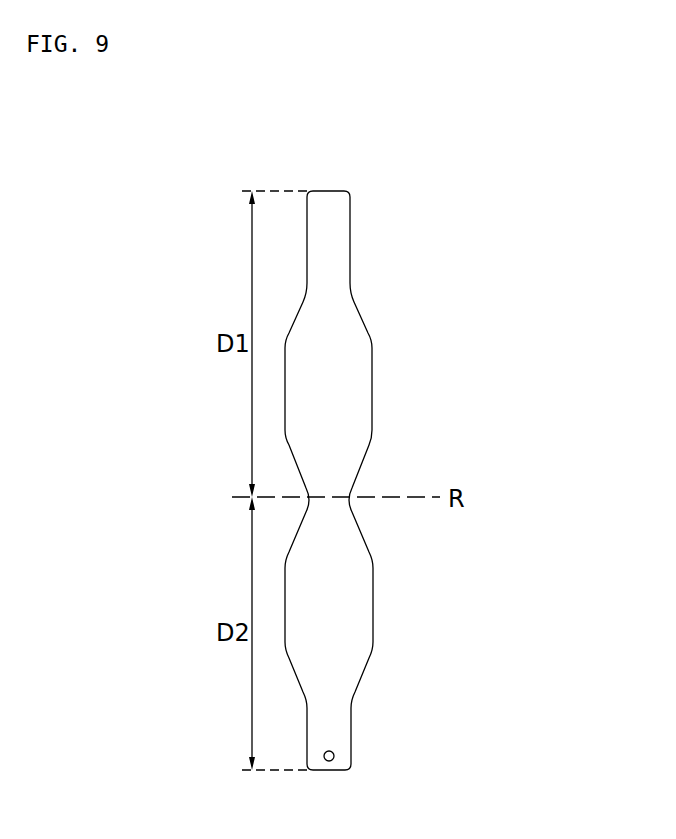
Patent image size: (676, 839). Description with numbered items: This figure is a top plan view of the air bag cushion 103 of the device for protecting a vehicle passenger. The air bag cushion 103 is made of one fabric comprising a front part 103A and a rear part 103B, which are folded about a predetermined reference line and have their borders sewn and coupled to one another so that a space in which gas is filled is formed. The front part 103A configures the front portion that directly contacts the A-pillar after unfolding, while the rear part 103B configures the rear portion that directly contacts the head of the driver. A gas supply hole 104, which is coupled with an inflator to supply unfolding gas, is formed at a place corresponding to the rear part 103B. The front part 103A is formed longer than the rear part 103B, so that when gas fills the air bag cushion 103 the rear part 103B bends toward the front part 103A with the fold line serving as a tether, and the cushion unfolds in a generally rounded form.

The air bag cushion 103 is at (492, 310).
The front part 103A is at (360, 620).
The rear part 103B is at (350, 340).
The gas supply hole 104 is at (334, 751).